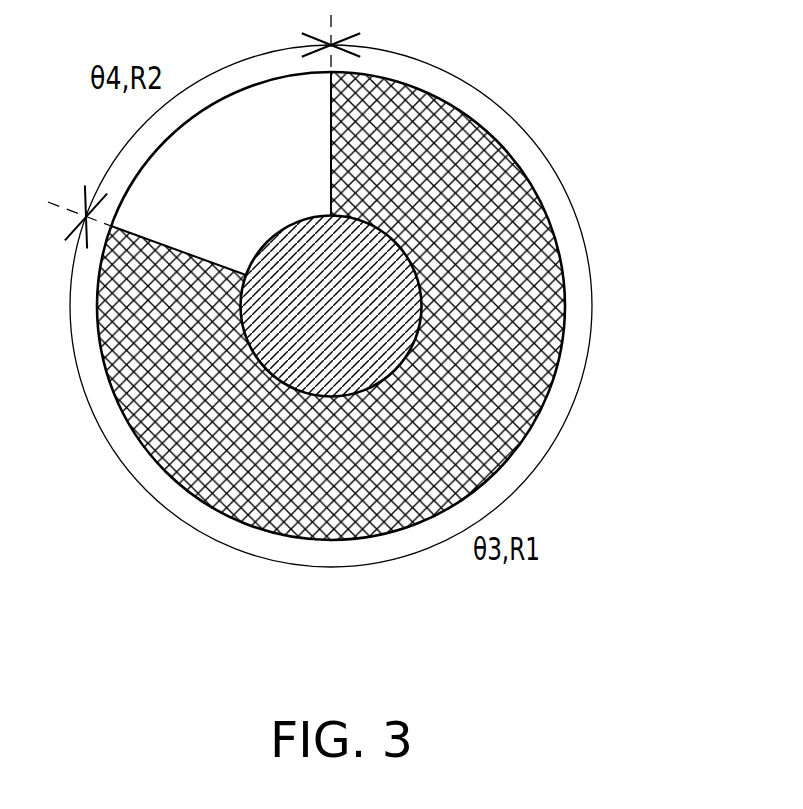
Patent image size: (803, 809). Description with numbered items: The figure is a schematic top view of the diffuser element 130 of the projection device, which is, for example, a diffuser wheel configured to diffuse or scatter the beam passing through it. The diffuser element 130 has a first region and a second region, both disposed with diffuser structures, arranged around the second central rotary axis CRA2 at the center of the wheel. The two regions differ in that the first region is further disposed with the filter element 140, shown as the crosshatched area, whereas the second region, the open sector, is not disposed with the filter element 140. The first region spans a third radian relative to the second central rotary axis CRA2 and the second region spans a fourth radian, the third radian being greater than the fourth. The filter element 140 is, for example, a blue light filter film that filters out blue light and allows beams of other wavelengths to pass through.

The diffuser element 130 is at (694, 563).
The filter element 140 is at (463, 197).
The second central rotary axis CRA2 is at (320, 362).